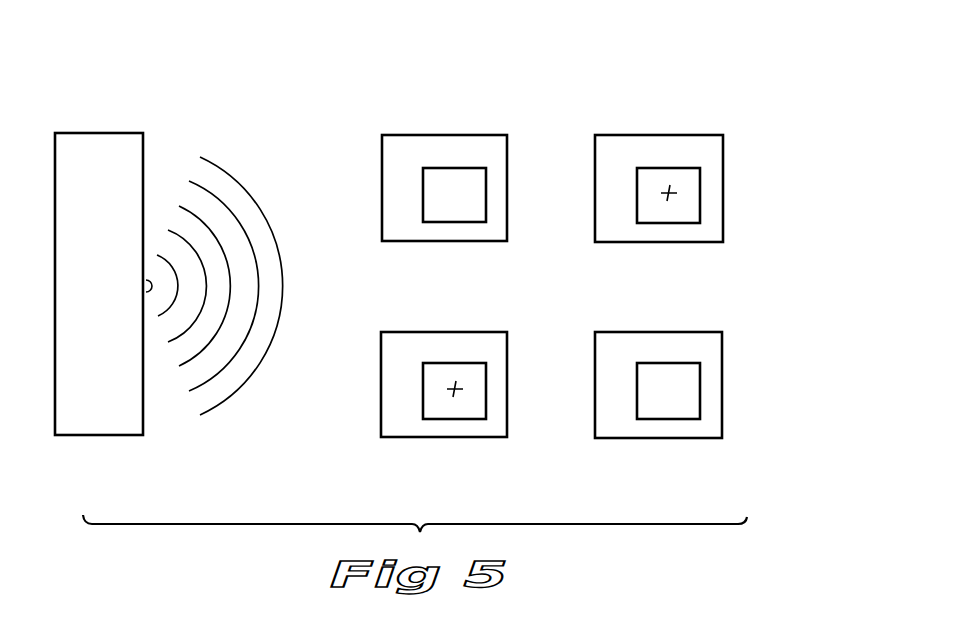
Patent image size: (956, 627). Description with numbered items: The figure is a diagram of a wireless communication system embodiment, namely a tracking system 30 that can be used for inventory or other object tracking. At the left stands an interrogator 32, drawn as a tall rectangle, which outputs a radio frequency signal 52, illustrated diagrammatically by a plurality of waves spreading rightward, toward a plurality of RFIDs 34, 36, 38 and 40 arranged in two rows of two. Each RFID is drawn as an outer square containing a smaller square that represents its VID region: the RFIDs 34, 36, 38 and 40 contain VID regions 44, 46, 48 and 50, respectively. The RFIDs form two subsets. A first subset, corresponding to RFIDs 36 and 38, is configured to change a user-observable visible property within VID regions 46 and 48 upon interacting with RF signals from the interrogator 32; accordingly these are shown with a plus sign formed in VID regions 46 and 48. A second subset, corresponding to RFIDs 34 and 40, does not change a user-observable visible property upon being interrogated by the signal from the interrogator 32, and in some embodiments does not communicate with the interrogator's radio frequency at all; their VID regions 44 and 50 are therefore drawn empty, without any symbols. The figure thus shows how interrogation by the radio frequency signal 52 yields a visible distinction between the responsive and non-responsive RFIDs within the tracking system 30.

The tracking system 30 is at (697, 88).
The interrogator 32 is at (108, 402).
The RFID 34 is at (455, 241).
The RFID 36 is at (665, 242).
The RFID 38 is at (455, 437).
The RFID 40 is at (665, 438).
The VID region 44 is at (486, 181).
The VID region 46 is at (700, 182).
The VID region 48 is at (486, 377).
The VID region 50 is at (700, 378).
The radio frequency signal 52 is at (175, 381).